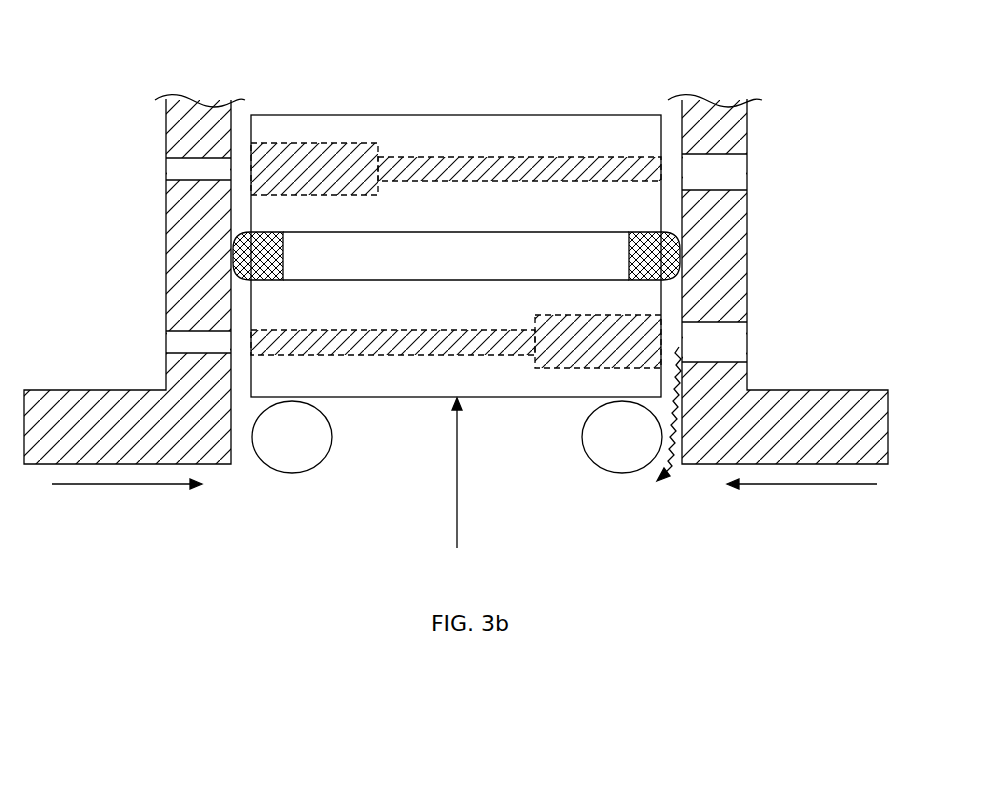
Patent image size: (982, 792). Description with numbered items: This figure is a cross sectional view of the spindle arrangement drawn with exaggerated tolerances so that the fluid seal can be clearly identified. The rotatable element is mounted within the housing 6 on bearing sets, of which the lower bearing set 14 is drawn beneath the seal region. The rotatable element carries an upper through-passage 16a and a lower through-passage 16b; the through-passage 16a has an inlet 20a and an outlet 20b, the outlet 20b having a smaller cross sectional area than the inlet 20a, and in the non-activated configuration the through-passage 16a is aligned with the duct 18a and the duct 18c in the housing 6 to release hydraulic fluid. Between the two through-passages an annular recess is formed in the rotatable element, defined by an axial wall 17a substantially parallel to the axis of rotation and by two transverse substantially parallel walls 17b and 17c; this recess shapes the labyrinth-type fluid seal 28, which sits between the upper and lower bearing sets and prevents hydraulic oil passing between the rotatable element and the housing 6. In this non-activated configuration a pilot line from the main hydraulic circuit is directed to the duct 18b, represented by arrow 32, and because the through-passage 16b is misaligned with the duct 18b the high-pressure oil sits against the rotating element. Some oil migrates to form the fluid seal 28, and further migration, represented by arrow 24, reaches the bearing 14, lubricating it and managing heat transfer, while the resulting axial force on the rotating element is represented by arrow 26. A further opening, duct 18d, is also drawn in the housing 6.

The housing 6 is at (456, 279).
The lower bearing set 14 is at (290, 467).
The through-passage 16a is at (449, 128).
The through-passage 16b is at (578, 358).
The axial wall 17a is at (445, 257).
The transverse wall 17b is at (263, 232).
The transverse wall 17c is at (262, 280).
The duct 18a is at (733, 177).
The duct 18b is at (740, 342).
The duct 18c is at (175, 168).
The opening 18d is at (173, 337).
The inlet 20a is at (253, 168).
The outlet 20b is at (653, 172).
The arrow 24 is at (662, 484).
The arrow 26 is at (457, 517).
The seal 28 is at (683, 258).
The arrow 32 is at (822, 270).